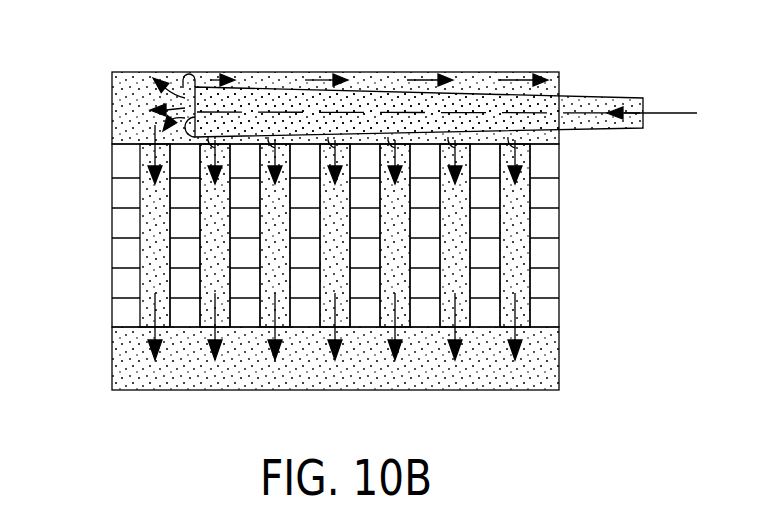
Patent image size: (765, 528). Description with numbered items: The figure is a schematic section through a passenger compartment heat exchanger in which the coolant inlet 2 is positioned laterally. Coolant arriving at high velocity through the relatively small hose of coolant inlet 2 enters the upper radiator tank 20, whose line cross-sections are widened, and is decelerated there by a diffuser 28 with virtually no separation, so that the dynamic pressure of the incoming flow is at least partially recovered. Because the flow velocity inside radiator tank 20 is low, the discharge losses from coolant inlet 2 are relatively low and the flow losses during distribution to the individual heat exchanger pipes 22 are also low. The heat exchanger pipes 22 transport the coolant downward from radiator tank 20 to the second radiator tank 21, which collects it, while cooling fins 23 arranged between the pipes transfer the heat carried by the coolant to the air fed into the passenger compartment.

The coolant inlet 2 is at (585, 97).
The radiator tank 20 is at (112, 98).
The radiator tank 21 is at (112, 360).
The heat exchanger pipes 22 is at (140, 162).
The cooling fins 23 is at (127, 205).
The diffuser 28 is at (262, 105).